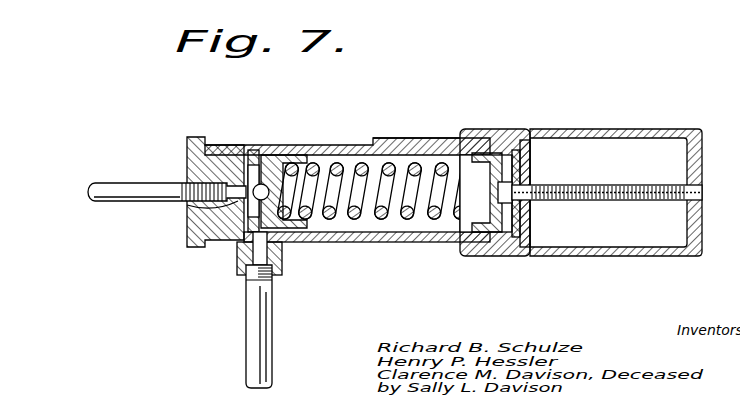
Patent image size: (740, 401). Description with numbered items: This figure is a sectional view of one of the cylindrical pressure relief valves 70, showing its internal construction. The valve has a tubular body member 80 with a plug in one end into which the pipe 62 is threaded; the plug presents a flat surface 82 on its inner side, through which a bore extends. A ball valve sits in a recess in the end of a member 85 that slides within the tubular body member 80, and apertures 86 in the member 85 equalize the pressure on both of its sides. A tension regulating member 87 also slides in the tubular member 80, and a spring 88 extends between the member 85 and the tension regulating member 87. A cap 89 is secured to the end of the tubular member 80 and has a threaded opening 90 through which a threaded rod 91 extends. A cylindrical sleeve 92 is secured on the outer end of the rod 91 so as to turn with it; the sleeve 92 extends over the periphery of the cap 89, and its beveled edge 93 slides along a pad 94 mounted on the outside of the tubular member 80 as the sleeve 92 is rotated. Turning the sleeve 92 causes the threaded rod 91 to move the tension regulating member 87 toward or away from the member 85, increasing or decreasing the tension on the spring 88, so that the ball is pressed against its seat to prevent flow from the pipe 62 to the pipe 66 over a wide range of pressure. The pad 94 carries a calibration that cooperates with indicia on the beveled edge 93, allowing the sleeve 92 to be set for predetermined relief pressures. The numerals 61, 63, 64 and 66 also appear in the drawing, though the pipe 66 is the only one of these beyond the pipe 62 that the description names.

The housing block 61 is at (207, 141).
The pipe 62 is at (100, 189).
The bushing 63 is at (193, 208).
The boss 64 is at (218, 247).
The pipe 66 is at (258, 372).
The pressure relief valve 70 is at (349, 140).
The tubular body member 80 is at (391, 242).
The flat surface 82 is at (252, 167).
The member 85 is at (291, 224).
The apertures 86 is at (281, 157).
The tension regulating member 87 is at (458, 238).
The spring 88 is at (369, 166).
The cap 89 is at (530, 233).
The threaded opening 90 is at (534, 173).
The threaded rod 91 is at (632, 184).
The cylindrical sleeve 92 is at (603, 129).
The beveled edge 93 is at (459, 141).
The pad 94 is at (437, 137).